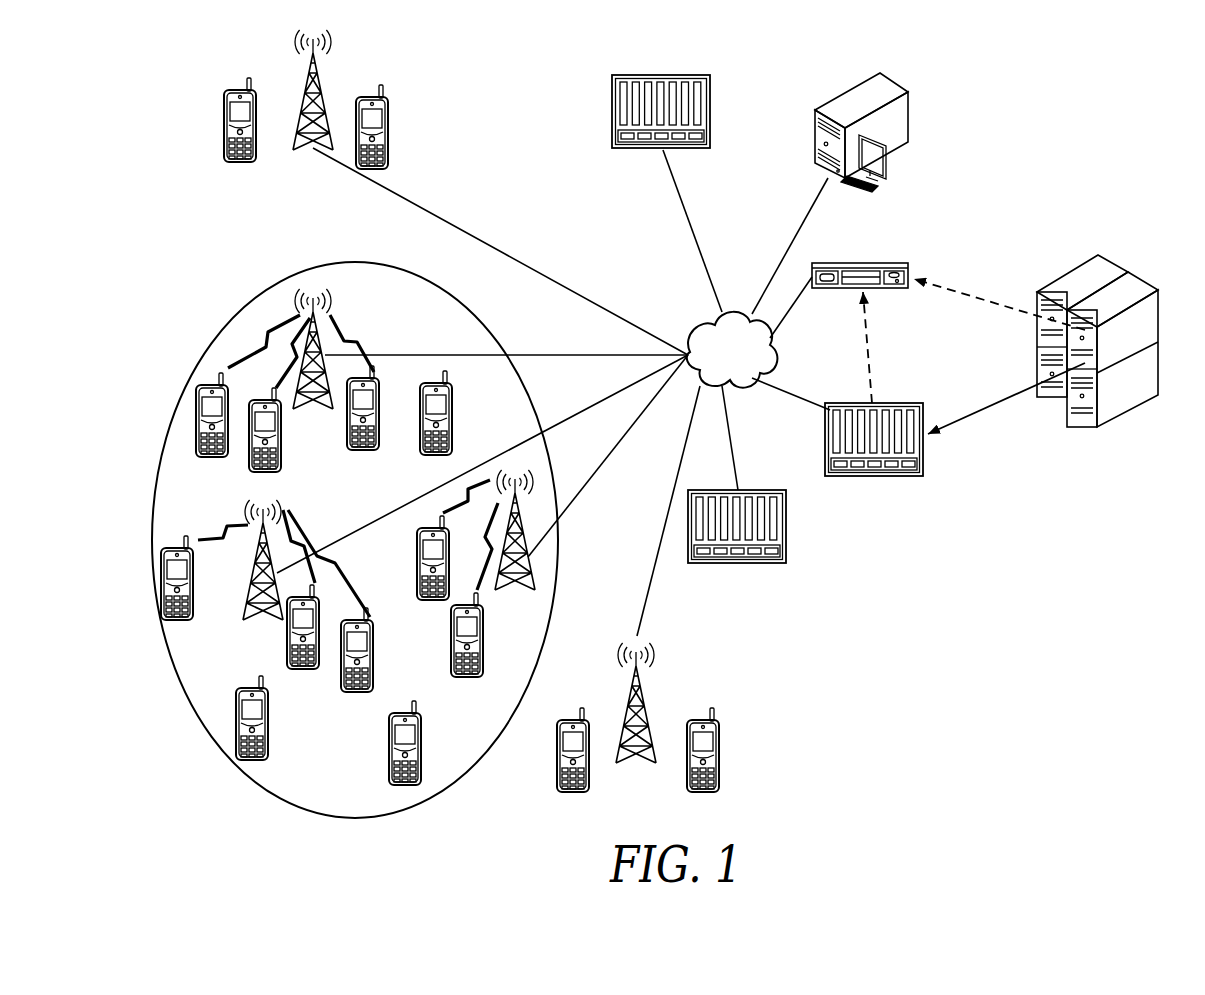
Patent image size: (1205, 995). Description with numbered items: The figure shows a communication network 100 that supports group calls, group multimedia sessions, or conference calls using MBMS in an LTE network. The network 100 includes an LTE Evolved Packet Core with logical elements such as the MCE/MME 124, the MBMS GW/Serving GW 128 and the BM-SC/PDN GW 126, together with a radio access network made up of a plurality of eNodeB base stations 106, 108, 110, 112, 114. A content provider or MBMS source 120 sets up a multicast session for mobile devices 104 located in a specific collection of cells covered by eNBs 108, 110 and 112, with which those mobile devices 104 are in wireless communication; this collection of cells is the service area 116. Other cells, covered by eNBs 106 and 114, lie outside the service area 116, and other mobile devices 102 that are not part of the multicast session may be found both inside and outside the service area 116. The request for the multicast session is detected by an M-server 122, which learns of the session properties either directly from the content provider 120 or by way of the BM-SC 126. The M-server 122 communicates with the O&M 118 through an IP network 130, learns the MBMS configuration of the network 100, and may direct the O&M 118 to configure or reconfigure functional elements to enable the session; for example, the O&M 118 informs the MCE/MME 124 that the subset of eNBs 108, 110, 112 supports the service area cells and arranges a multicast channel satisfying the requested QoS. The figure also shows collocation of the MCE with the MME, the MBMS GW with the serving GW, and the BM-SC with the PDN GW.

The communication network 100 is at (1098, 120).
The mobile devices 102 is at (224, 130).
The mobile devices 104 is at (196, 423).
The eNodeB infrastructure device 106 is at (318, 66).
The eNodeB infrastructure device 108 is at (319, 406).
The eNodeB infrastructure device 110 is at (251, 614).
The eNodeB infrastructure device 112 is at (538, 569).
The eNodeB infrastructure device 114 is at (650, 700).
The service area 116 is at (478, 322).
The O&M 118 is at (896, 81).
The content provider/MBMS source 120 is at (1147, 279).
The M-server 122 is at (902, 290).
The MCE/MME 124 is at (700, 76).
The BM-SC/PDN GW 126 is at (910, 403).
The MBMS GW/Serving GW 128 is at (760, 490).
The IP network 130 is at (773, 357).